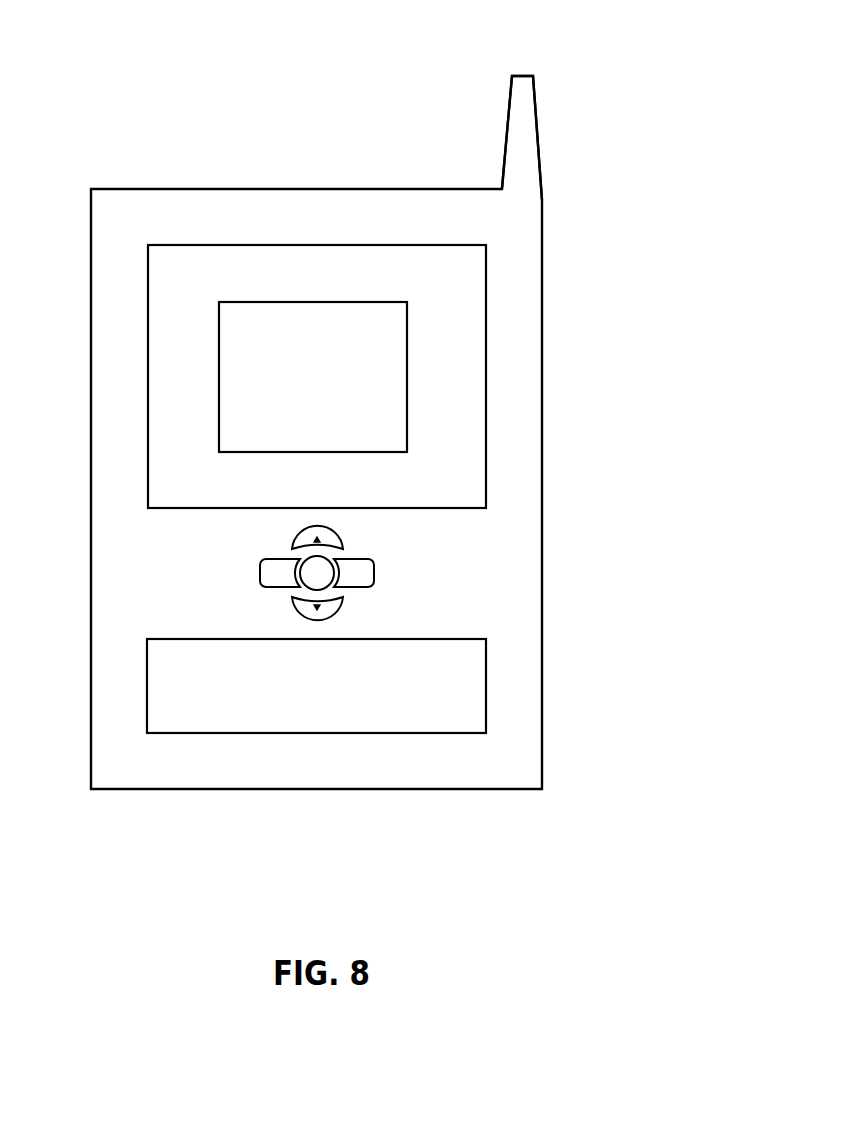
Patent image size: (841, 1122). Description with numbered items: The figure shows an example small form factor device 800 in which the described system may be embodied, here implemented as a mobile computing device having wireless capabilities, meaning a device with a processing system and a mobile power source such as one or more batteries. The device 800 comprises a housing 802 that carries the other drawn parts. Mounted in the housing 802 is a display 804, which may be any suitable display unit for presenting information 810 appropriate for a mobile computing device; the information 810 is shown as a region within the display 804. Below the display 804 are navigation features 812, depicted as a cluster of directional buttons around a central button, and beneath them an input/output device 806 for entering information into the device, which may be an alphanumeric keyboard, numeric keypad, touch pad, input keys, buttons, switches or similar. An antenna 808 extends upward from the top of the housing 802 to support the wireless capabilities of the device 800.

The small form factor device 800 is at (110, 96).
The housing 802 is at (542, 489).
The display 804 is at (486, 263).
The input/output (I/O) device 806 is at (486, 677).
The antenna 808 is at (508, 124).
The information 810 is at (407, 370).
The navigation features 812 is at (387, 563).